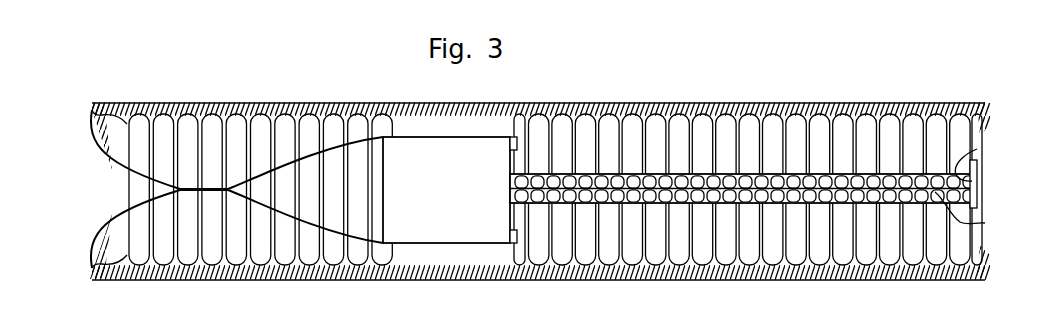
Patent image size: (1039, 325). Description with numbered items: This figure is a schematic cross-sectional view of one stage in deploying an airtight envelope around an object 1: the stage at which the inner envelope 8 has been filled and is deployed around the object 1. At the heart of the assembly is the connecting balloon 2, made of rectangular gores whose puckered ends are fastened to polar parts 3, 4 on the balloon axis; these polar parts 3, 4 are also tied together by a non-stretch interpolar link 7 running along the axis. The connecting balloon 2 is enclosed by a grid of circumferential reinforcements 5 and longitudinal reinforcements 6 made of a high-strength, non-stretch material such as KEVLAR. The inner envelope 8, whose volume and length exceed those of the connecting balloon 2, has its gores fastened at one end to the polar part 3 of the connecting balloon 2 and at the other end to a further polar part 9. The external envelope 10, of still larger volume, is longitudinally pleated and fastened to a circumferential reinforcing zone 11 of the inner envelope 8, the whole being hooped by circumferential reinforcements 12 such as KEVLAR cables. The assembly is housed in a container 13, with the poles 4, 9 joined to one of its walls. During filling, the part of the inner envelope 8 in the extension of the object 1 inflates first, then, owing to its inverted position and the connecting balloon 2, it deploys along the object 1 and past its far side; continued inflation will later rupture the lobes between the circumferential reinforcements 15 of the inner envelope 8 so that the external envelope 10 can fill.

The object 1 is at (424, 219).
The connecting balloon 2 is at (985, 223).
The polar part 3 is at (977, 190).
The polar part 4 is at (509, 200).
The circumferential reinforcements 5 is at (810, 192).
The longitudinal reinforcements 6 is at (797, 175).
The interpolar link 7 is at (977, 149).
The inner envelope 8 is at (703, 128).
The polar part 9 is at (510, 231).
The external envelope 10 is at (622, 112).
The circumferential reinforcing zone 11 is at (97, 242).
The circumferential reinforcements 12 is at (107, 213).
The container 13 is at (507, 163).
The circumferential reinforcements 15 is at (763, 137).